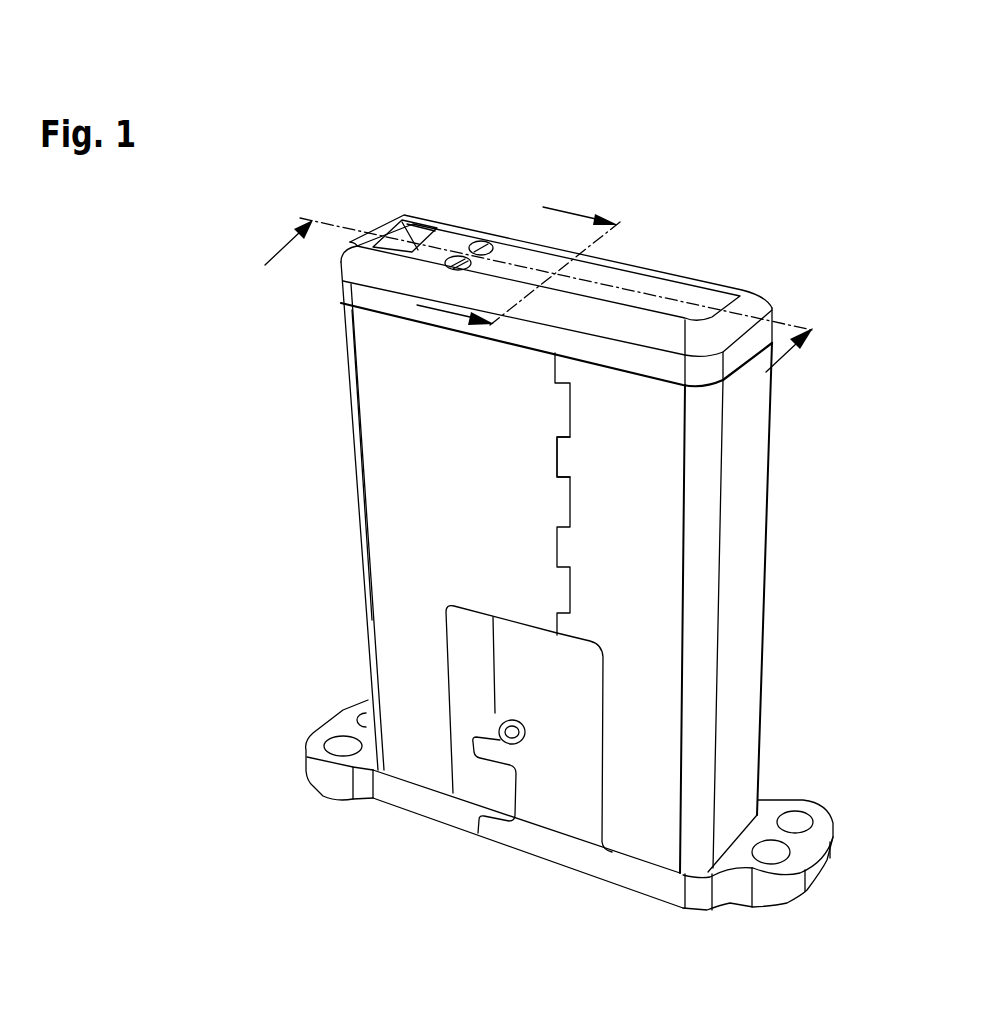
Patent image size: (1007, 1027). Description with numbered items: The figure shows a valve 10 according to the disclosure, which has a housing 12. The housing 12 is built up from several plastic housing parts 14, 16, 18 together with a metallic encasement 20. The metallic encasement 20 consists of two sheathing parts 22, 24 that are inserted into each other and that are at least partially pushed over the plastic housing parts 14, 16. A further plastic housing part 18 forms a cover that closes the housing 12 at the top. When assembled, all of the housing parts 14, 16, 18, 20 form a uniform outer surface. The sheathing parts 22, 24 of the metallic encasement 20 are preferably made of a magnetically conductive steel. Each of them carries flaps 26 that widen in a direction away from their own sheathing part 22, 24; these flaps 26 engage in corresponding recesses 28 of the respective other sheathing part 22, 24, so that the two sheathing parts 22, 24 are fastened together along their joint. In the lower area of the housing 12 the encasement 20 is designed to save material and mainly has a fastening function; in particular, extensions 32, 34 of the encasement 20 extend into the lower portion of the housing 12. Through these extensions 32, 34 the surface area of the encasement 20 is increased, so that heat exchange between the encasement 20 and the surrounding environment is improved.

The valve 10 is at (794, 219).
The housing 12 is at (305, 461).
The plastic housing part 14 is at (478, 778).
The plastic housing part 16 is at (552, 800).
The plastic housing part 18 is at (650, 288).
The metallic encasement 20 is at (703, 502).
The sheathing part 22 is at (455, 432).
The sheathing part 24 is at (645, 452).
The flap 26 is at (560, 502).
The recess 28 is at (572, 520).
The extension 32 is at (402, 673).
The extension 34 is at (650, 732).